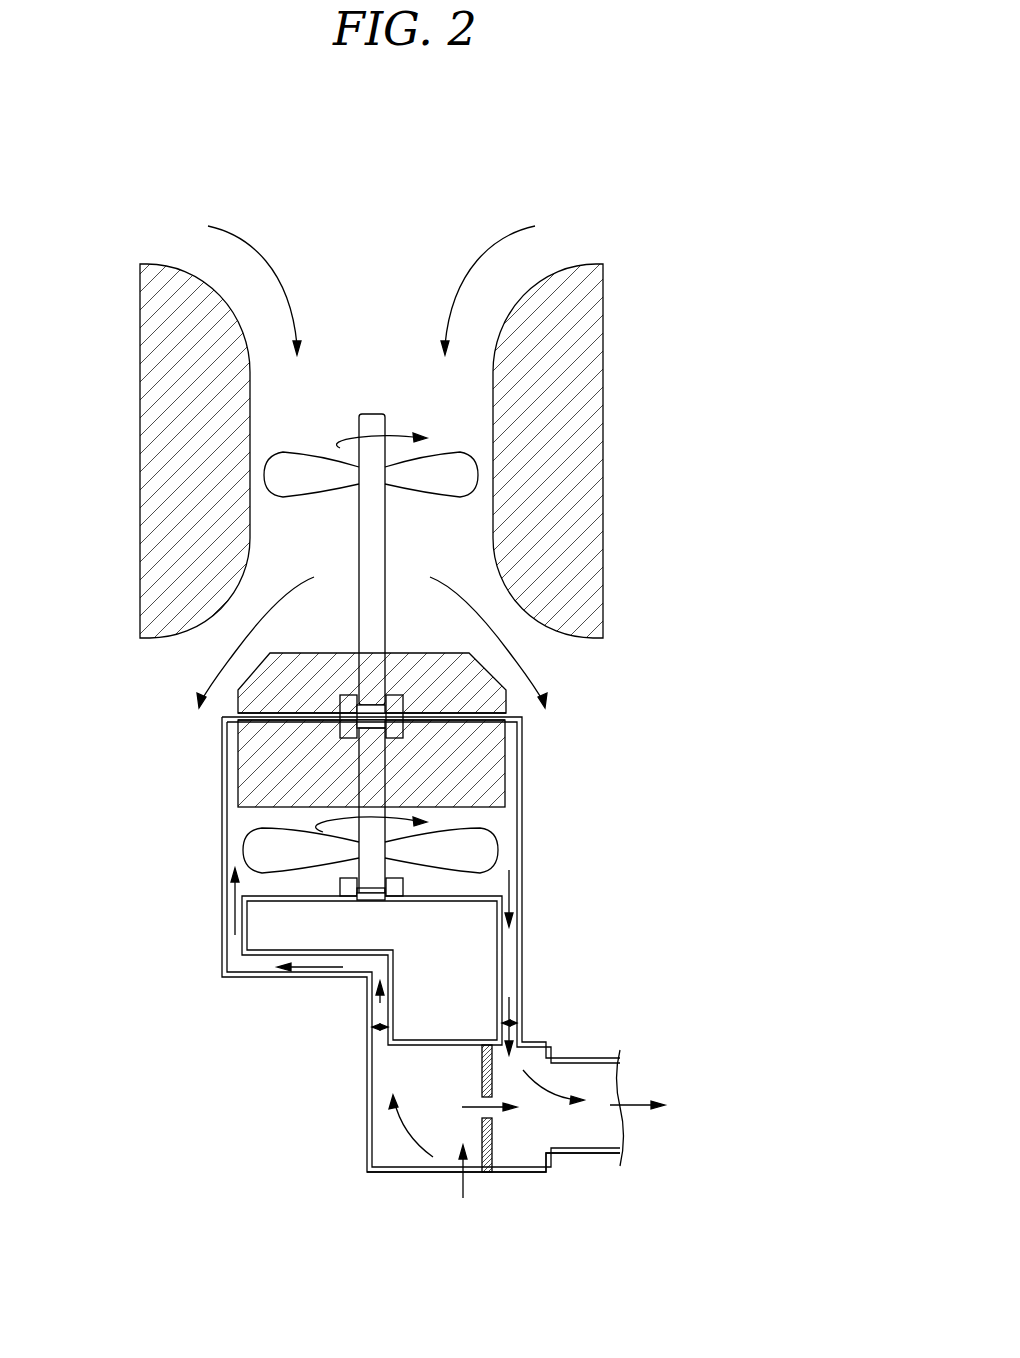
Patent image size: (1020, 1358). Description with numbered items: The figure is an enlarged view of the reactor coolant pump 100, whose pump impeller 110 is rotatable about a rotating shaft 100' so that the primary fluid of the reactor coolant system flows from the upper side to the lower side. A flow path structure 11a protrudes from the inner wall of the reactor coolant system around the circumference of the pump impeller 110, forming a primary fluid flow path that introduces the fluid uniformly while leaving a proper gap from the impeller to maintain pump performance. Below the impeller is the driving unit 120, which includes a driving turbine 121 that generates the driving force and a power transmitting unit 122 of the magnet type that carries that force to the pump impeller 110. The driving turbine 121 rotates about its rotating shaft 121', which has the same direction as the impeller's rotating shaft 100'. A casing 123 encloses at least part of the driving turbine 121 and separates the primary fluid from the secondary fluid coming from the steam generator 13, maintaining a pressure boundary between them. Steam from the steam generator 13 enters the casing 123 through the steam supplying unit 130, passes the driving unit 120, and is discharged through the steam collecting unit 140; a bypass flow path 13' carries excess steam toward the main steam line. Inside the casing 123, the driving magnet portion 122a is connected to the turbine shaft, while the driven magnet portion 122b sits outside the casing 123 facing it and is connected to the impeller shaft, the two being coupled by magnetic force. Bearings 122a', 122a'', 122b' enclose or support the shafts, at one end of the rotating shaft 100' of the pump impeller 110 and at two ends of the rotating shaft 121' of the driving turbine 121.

The reactor coolant pump 100 is at (447, 663).
The flow path structure 11a is at (166, 342).
The pump impeller 110 is at (462, 470).
The rotation shaft 100' is at (517, 559).
The power transmitting unit 122 is at (686, 638).
The driven magnet portion 122b is at (461, 679).
The driving magnet portion 122a is at (461, 763).
The bearing 122b' is at (251, 713).
The bearing 122a' is at (251, 747).
The bearing 122a'' is at (251, 909).
The rotating shaft of the driving turbine 121' is at (494, 810).
The driving turbine 121 is at (433, 845).
The casing 123 is at (220, 858).
The driving unit 120 is at (670, 822).
The steam supplying unit 130 is at (370, 1027).
The steam collecting unit 140 is at (516, 1023).
The steam generator 13 is at (493, 1200).
The bypass flow path 13' is at (507, 1146).